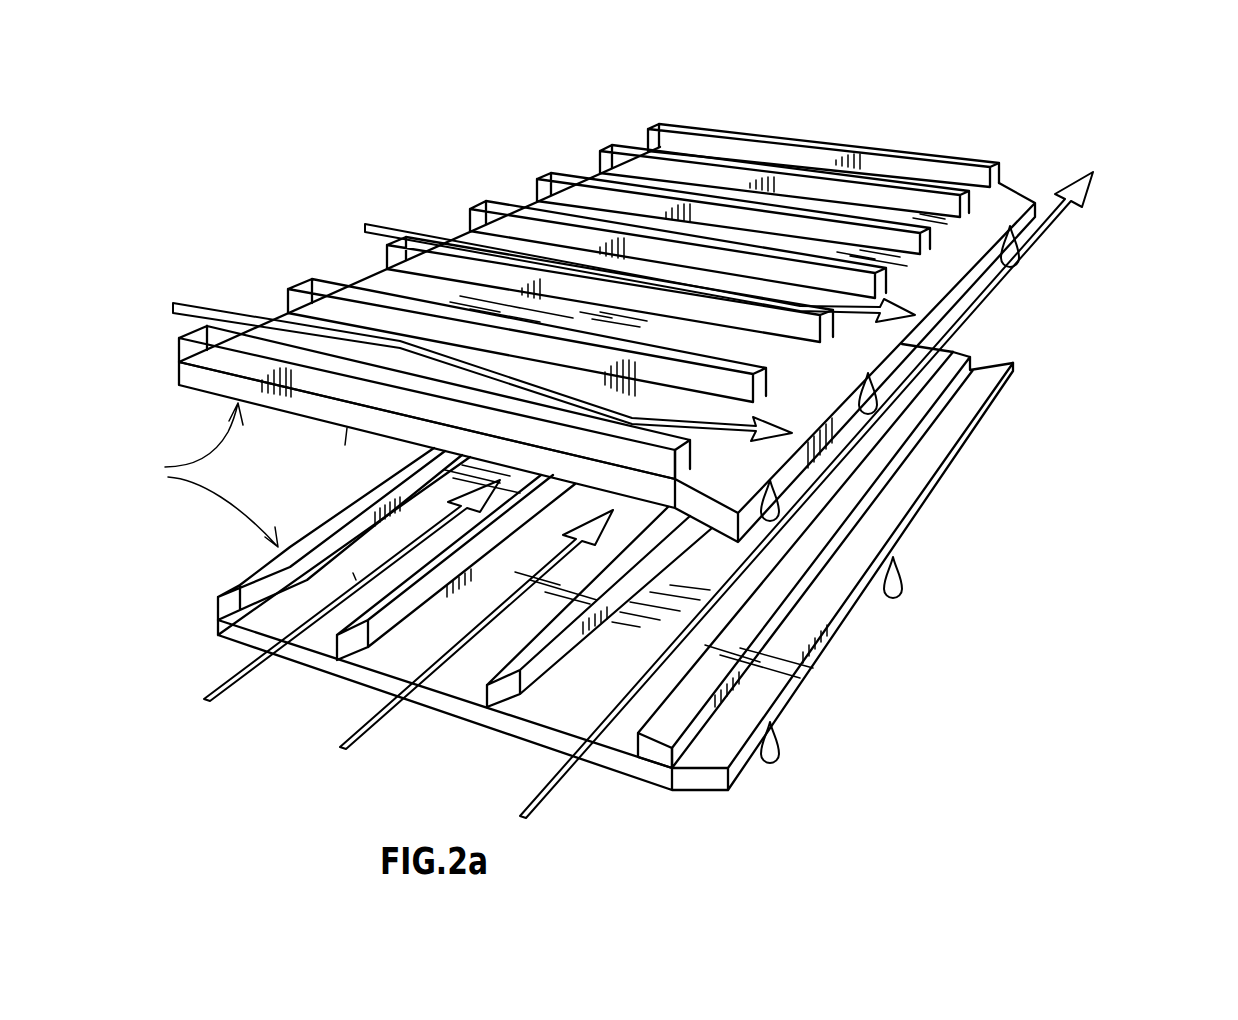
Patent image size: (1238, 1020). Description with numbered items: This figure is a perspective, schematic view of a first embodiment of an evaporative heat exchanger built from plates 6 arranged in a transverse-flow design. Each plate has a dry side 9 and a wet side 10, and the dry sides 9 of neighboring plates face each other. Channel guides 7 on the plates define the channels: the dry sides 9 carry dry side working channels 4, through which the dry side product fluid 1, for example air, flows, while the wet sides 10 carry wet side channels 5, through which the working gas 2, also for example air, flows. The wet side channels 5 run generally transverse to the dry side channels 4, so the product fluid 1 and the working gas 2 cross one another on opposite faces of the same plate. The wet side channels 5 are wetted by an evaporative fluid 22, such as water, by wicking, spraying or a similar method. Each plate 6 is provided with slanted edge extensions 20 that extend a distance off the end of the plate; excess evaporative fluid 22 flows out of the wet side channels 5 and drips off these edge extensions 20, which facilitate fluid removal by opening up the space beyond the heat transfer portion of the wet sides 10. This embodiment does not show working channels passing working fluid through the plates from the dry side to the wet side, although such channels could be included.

The dry side product fluid 1 is at (1097, 174).
The working gas 2 is at (365, 228).
The dry side working channels 4 is at (275, 625).
The wet side channels 5 is at (380, 287).
The plates 6 is at (353, 573).
The channel guides 7 is at (480, 208).
The dry sides of plates 9 is at (210, 475).
The wet sides of plates 10 is at (786, 128).
The edge extensions 20 is at (1033, 205).
The evaporative fluid 22 is at (1018, 262).